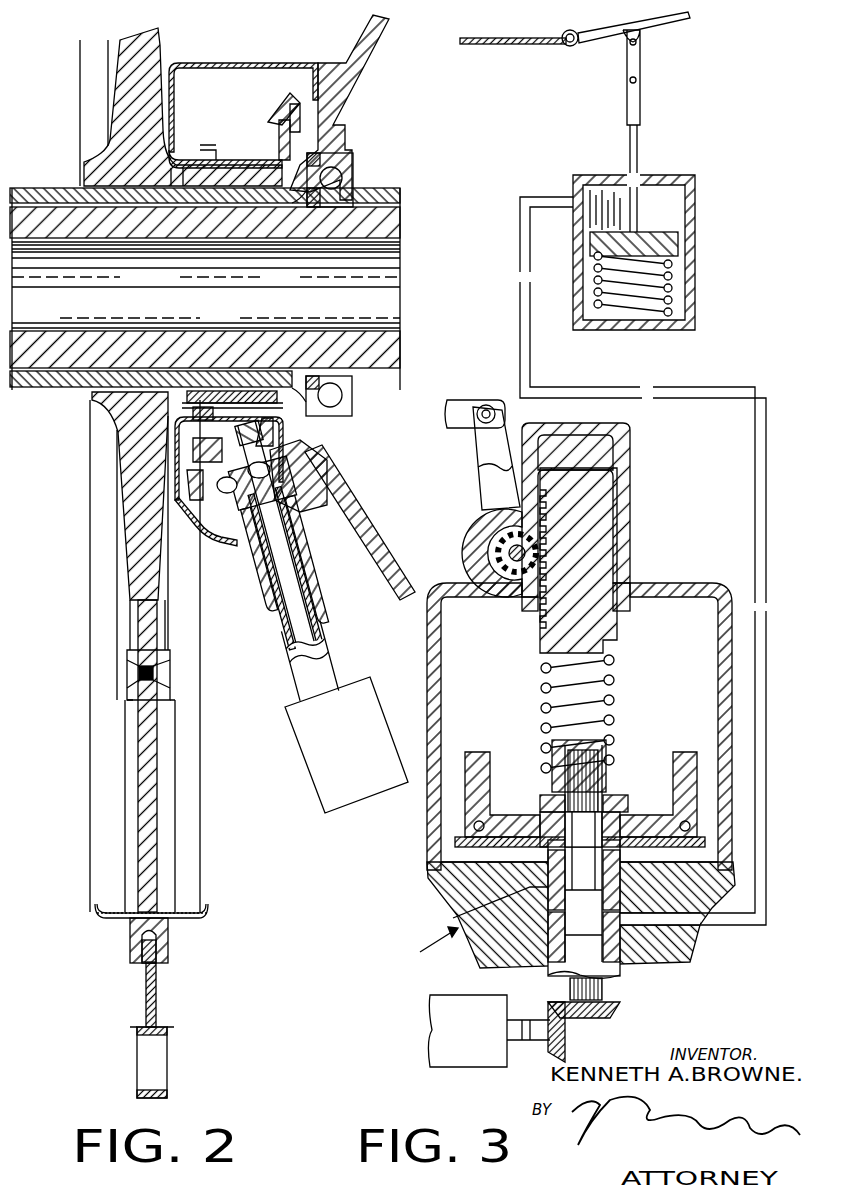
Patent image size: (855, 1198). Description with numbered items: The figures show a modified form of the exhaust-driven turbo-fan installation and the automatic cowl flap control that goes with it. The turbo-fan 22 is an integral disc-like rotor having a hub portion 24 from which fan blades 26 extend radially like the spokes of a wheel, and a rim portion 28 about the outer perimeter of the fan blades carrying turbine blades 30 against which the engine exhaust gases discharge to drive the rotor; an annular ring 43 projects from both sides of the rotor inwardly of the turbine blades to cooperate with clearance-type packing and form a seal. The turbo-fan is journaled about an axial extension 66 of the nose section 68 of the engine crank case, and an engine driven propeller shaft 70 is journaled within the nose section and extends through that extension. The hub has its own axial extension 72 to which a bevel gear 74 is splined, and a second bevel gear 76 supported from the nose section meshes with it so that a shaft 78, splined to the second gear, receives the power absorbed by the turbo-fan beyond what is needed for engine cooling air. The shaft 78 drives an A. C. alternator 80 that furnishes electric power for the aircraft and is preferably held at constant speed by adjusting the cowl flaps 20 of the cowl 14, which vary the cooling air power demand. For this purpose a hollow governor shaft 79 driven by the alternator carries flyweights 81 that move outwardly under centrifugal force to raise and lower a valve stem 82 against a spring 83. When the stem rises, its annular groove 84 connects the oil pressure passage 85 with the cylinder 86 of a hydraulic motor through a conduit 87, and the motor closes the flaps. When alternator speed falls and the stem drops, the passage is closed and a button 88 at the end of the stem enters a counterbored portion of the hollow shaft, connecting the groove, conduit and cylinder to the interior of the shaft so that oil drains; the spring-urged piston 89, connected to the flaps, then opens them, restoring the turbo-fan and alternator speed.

In FIG. 3, the cowl 14 is at (508, 46).
In FIG. 3, the cowl flaps 20 is at (680, 24).
In FIG. 2, the turbo-fan 22 is at (208, 707).
In FIG. 2, the hub portion 24 is at (118, 94).
In FIG. 2, the fan blades 26 is at (146, 807).
In FIG. 2, the rim portion 28 is at (155, 1000).
In FIG. 2, the turbine blades 30 is at (160, 1058).
In FIG. 2, the annular ring 43 is at (113, 912).
In FIG. 2, the axial extension 66 is at (62, 382).
In FIG. 2, the nose section 68 is at (366, 48).
In FIG. 2, the propeller shaft 70 is at (376, 206).
In FIG. 2, the axial extension 72 is at (236, 402).
In FIG. 2, the bevel gear 74 is at (279, 130).
In FIG. 2, the second bevel gear 76 is at (204, 520).
In FIG. 2, the shaft 78 is at (317, 634).
In FIG. 3, the hollow governor shaft 79 is at (567, 986).
In FIG. 2, the A. C. alternator 80 is at (324, 776).
In FIG. 3, the A. C. alternator 80 is at (477, 1058).
In FIG. 3, the flyweights 81 is at (490, 732).
In FIG. 3, the valve stem 82 is at (575, 868).
In FIG. 3, the spring 83 is at (614, 660).
In FIG. 3, the annular groove 84 is at (664, 957).
In FIG. 3, the oil pressure passage 85 is at (453, 916).
In FIG. 3, the cylinder 86 is at (676, 205).
In FIG. 3, the conduit 87 is at (520, 232).
In FIG. 3, the button 88 is at (618, 966).
In FIG. 3, the piston 89 is at (598, 244).